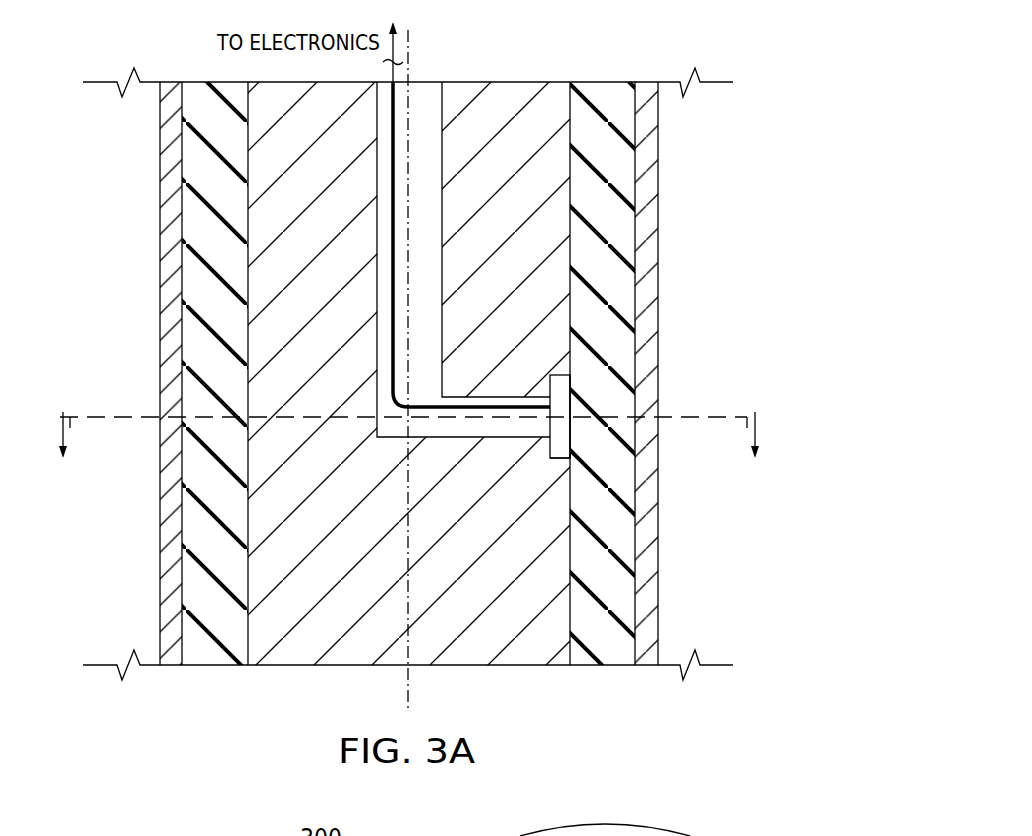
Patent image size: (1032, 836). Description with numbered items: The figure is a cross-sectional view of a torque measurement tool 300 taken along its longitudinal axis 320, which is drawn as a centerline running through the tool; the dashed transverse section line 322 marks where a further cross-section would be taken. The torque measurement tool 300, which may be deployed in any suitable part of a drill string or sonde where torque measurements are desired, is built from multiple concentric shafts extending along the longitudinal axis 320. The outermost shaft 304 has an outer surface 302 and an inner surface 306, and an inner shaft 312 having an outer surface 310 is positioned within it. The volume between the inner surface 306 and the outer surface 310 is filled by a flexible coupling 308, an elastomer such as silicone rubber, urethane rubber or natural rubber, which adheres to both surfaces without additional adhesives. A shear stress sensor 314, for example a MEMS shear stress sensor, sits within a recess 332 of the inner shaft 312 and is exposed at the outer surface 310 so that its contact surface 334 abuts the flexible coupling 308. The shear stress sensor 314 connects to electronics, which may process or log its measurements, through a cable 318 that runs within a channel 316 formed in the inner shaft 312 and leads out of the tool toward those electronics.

The torque measurement tool 300 is at (80, 58).
The outer surface 302 is at (658, 218).
The outermost shaft 304 is at (647, 255).
The inner surface 306 is at (637, 310).
The flexible coupling 308 is at (613, 538).
The outer surface 310 is at (570, 505).
The inner shaft 312 is at (507, 92).
The shear stress sensor 314 is at (560, 375).
The channel 316 is at (380, 265).
The cable 318 is at (392, 163).
The longitudinal axis 320 is at (410, 683).
The section plane 3B-3B 322 is at (138, 415).
The recess 332 is at (550, 448).
The contact surface 334 is at (573, 432).